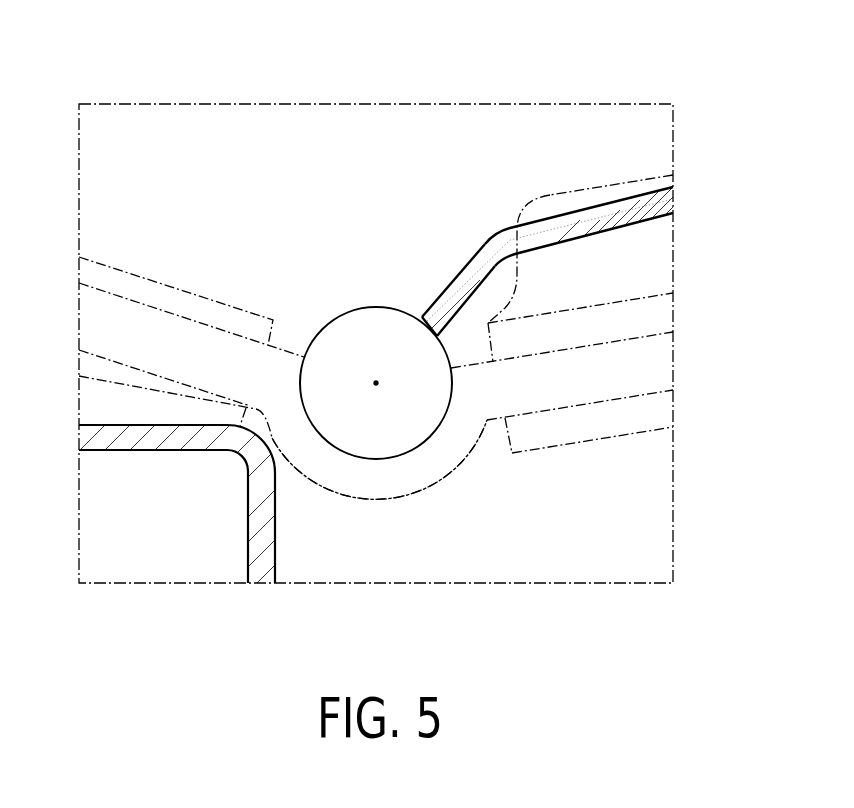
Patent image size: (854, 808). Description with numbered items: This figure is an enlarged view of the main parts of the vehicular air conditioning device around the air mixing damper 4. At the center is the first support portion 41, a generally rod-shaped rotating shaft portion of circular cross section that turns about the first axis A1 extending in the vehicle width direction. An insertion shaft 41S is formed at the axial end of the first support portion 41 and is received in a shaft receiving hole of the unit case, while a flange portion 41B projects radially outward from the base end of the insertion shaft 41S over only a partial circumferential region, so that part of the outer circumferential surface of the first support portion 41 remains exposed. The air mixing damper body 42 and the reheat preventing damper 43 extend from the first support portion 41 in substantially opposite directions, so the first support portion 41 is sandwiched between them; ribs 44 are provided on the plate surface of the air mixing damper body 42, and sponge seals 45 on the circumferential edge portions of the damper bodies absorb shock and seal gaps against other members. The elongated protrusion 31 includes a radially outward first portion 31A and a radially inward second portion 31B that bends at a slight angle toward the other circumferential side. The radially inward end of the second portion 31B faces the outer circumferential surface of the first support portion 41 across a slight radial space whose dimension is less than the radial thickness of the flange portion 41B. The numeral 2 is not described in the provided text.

The air mixing damper 4 is at (107, 101).
The sponge seal 45 is at (134, 275).
The reheat preventing damper 43 is at (195, 318).
The air mixing damper body 42 is at (542, 416).
The rib 44 is at (633, 180).
The frame member 2 is at (265, 570).
The elongated protrusion 31 is at (570, 233).
The second portion 31B is at (458, 288).
The first portion 31A is at (587, 222).
The first support portion 41 is at (396, 437).
The insertion shaft 41S is at (417, 412).
The flange portion 41B is at (423, 470).
The first axis A1 is at (375, 385).